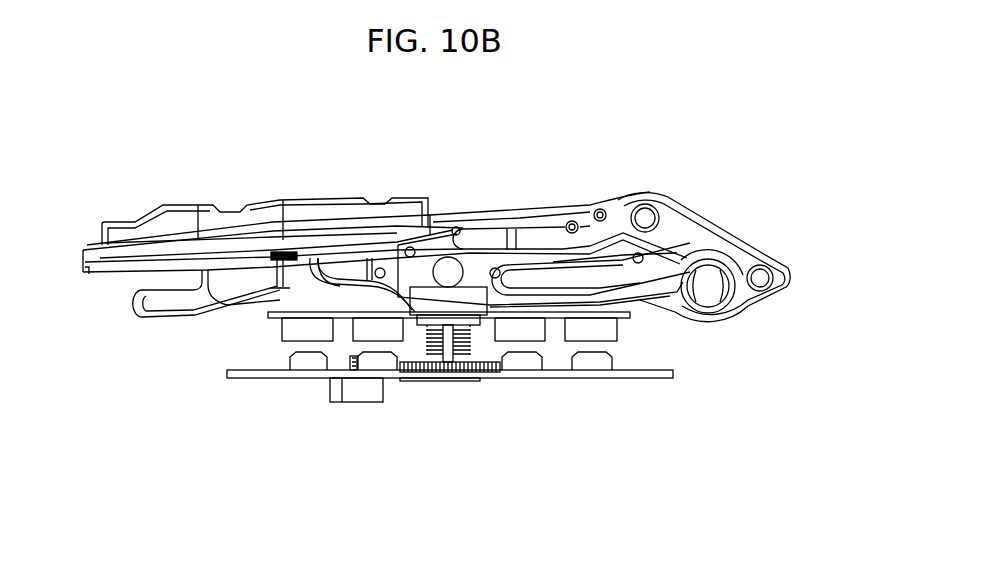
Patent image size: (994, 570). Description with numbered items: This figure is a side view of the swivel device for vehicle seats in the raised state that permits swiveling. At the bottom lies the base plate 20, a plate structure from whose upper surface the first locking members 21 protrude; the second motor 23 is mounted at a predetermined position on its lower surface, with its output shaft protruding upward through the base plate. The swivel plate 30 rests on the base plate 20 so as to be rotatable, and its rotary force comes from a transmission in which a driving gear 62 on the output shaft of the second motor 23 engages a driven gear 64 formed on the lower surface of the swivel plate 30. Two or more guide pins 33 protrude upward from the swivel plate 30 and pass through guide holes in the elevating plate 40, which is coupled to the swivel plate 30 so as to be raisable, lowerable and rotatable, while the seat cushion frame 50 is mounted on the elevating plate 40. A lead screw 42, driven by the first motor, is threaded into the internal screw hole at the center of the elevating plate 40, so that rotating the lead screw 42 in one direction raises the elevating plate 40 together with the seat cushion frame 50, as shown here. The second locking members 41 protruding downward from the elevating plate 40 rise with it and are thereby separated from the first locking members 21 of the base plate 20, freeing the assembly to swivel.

The base plate 20 is at (617, 378).
The first locking members 21 is at (300, 362).
The second motor 23 is at (368, 400).
The swivel plate 30 is at (480, 368).
The guide pins 33 is at (448, 328).
The elevating plate 40 is at (297, 311).
The second locking members 41 is at (288, 332).
The lead screw 42 is at (432, 343).
The seat cushion frame 50 is at (673, 205).
The driving gear 62 is at (349, 368).
The driven gear 64 is at (450, 368).